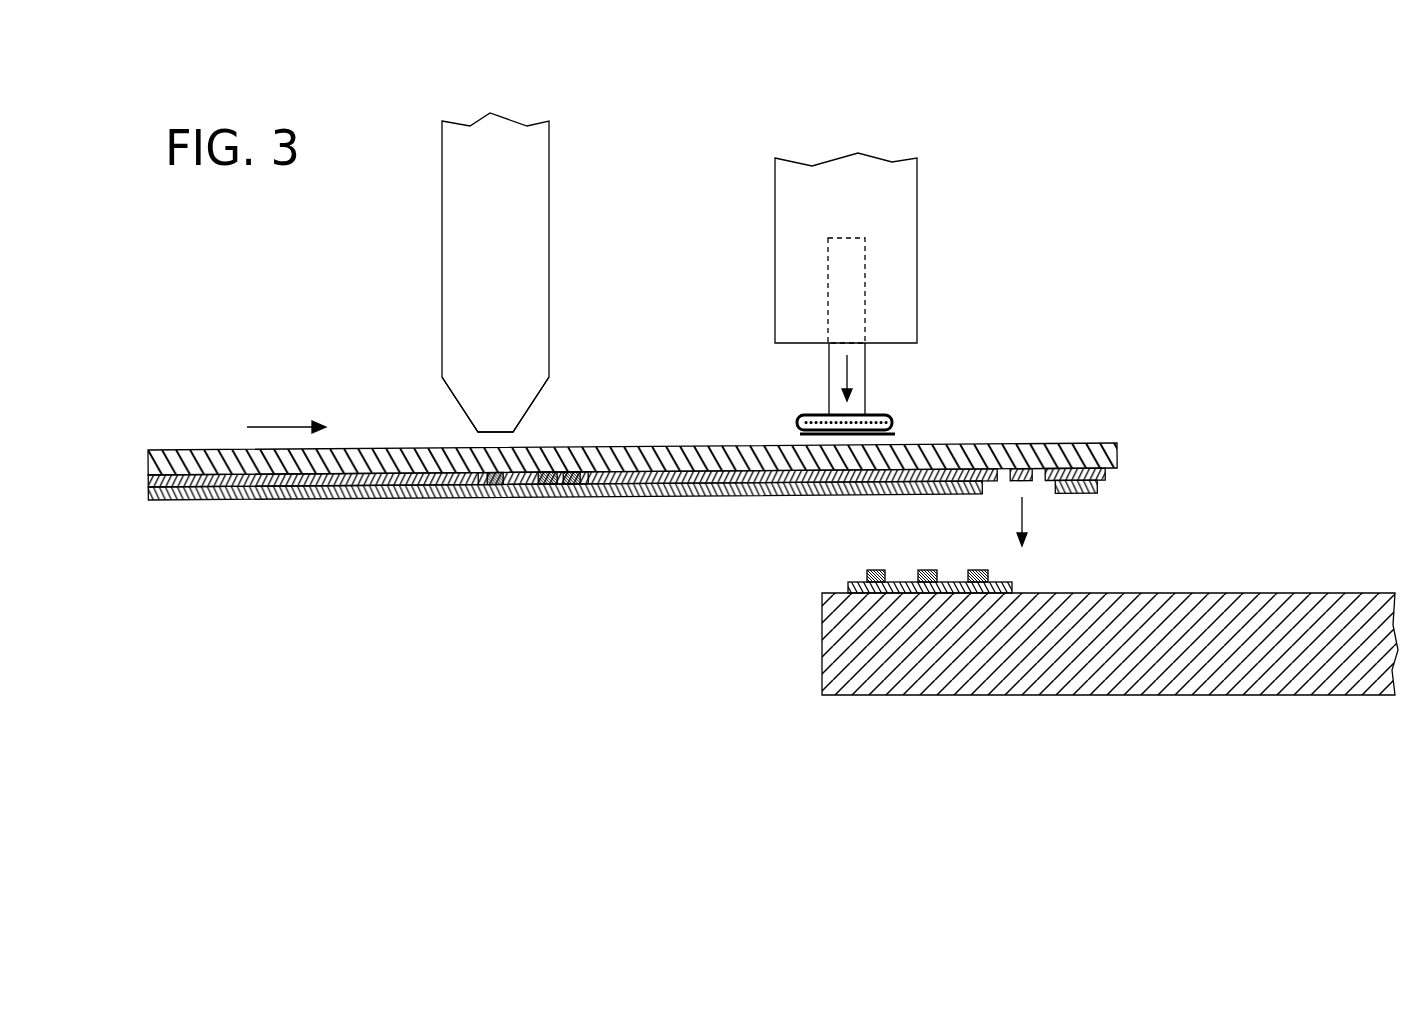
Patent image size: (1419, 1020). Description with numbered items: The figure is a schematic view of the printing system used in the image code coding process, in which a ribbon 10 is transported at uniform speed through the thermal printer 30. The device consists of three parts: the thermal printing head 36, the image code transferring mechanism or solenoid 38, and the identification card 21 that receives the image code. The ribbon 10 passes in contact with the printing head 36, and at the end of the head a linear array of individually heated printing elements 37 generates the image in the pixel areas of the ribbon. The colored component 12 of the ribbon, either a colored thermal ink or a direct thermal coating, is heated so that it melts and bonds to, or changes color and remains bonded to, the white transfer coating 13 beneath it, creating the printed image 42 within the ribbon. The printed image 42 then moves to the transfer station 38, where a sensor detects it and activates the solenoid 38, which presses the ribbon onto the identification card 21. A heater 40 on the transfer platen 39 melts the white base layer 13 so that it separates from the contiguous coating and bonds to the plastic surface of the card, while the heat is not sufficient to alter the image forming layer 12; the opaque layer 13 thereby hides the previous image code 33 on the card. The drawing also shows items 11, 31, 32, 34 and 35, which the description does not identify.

The ribbon 10 is at (637, 482).
The base film 11 is at (177, 451).
The colored component 12 is at (150, 479).
The white transfer coating 13 is at (315, 499).
The identification card 21 is at (995, 678).
The thermal printer 30 is at (868, 293).
The cut portion of adhesive layer 31 is at (482, 480).
The electrode layer 32 is at (845, 588).
The previous image code 33 is at (875, 569).
The separated adhesive piece 34 is at (1038, 479).
The peeled protective film portion 35 is at (998, 496).
The thermal printing head 36 is at (519, 210).
The heated printing elements 37 is at (508, 419).
The image code transferring mechanism (solenoid) 38 is at (901, 289).
The transfer platen 39 is at (798, 434).
The heater 40 is at (880, 412).
The printed image 42 is at (585, 502).